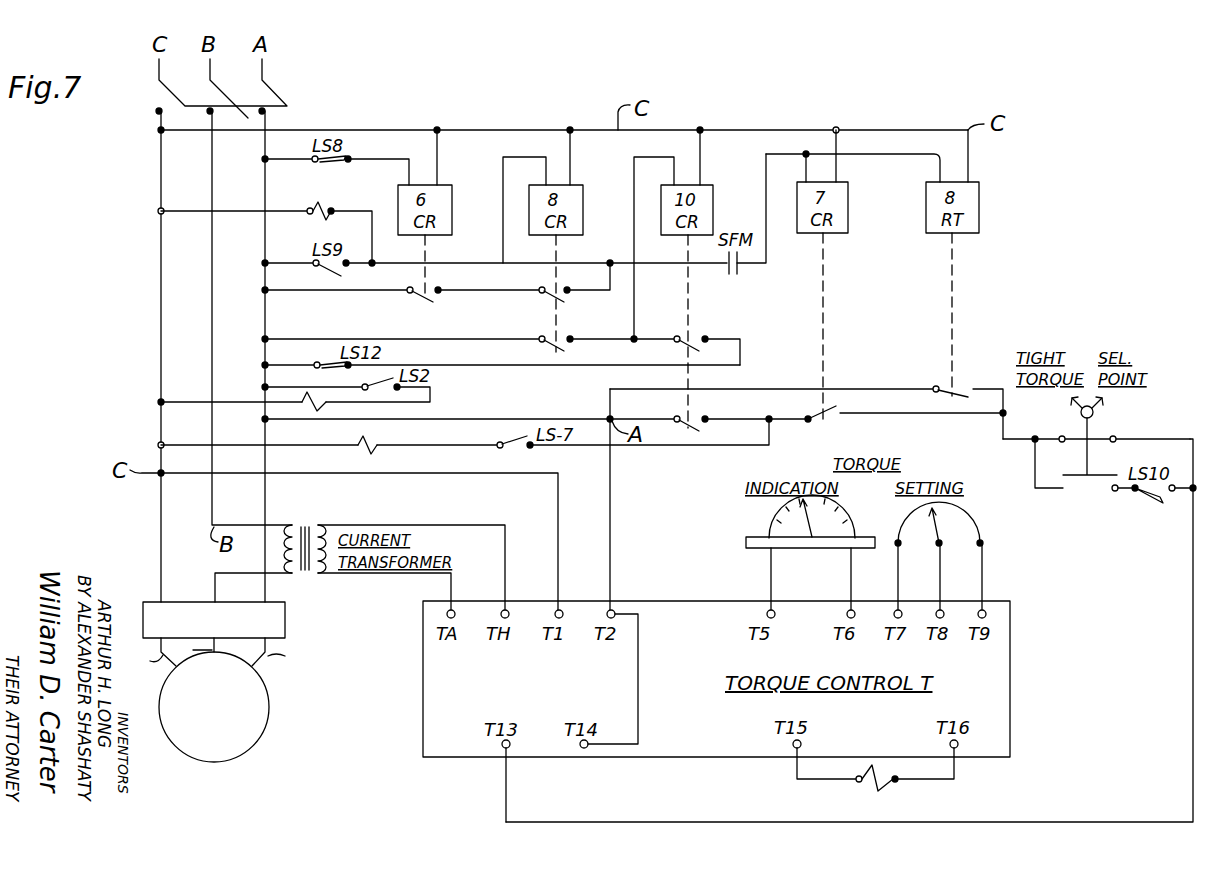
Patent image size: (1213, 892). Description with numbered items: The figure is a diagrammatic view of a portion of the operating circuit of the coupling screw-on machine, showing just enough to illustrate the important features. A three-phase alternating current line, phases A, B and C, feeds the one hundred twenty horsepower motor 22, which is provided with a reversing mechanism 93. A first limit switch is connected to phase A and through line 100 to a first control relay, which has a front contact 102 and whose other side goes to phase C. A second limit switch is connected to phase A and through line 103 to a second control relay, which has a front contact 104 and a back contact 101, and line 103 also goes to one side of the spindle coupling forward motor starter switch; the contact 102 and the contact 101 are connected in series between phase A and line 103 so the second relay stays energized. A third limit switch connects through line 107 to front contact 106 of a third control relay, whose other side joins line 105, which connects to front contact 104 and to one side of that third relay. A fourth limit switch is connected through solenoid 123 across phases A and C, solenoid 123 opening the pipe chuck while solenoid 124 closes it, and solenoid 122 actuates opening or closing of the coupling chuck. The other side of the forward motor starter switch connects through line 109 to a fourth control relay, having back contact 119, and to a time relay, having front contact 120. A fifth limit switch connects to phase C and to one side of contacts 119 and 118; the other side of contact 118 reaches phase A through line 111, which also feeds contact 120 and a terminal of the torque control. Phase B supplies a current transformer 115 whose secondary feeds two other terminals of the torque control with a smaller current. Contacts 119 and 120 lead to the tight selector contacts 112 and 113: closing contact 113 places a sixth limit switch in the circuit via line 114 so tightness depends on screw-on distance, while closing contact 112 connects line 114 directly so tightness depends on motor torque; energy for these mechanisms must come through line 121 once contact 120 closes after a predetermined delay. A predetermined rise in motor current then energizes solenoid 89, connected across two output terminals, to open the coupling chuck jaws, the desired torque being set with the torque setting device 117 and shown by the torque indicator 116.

The motor 22 is at (269, 703).
The solenoid 89 is at (888, 784).
The reversing mechanism 93 is at (286, 622).
The line 100 is at (409, 157).
The back contact of relay 8-CR 101 is at (571, 293).
The front contact of relay 6-CR 102 is at (443, 293).
The line 103 is at (522, 162).
The front contact of relay 8-CR 104 is at (573, 342).
The line 105 is at (646, 160).
The front contact of relay 10-CR 106 is at (705, 336).
The line 107 is at (527, 369).
The line 109 is at (937, 160).
The line 111 is at (611, 388).
The contact 112 is at (1062, 436).
The contact 113 is at (1063, 488).
The line 114 is at (1190, 494).
The current transformer 115 is at (305, 524).
The torque indicator 116 is at (797, 549).
The torque setting device 117 is at (983, 543).
The front contact of relay 10-CR 118 is at (705, 416).
The back contact of relay 7-CR 119 is at (836, 412).
The front contact of time relay 8-TR 120 is at (971, 384).
The line 121 is at (1003, 416).
The solenoid 122 is at (334, 208).
The solenoid 123 is at (322, 406).
The solenoid 124 is at (379, 444).